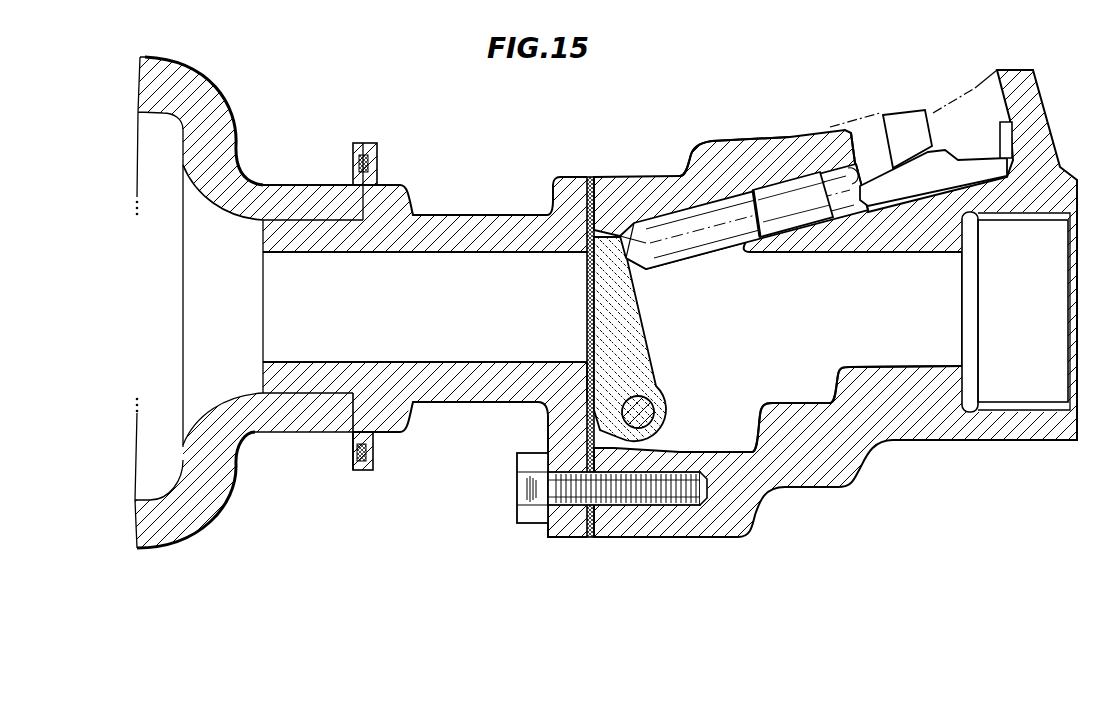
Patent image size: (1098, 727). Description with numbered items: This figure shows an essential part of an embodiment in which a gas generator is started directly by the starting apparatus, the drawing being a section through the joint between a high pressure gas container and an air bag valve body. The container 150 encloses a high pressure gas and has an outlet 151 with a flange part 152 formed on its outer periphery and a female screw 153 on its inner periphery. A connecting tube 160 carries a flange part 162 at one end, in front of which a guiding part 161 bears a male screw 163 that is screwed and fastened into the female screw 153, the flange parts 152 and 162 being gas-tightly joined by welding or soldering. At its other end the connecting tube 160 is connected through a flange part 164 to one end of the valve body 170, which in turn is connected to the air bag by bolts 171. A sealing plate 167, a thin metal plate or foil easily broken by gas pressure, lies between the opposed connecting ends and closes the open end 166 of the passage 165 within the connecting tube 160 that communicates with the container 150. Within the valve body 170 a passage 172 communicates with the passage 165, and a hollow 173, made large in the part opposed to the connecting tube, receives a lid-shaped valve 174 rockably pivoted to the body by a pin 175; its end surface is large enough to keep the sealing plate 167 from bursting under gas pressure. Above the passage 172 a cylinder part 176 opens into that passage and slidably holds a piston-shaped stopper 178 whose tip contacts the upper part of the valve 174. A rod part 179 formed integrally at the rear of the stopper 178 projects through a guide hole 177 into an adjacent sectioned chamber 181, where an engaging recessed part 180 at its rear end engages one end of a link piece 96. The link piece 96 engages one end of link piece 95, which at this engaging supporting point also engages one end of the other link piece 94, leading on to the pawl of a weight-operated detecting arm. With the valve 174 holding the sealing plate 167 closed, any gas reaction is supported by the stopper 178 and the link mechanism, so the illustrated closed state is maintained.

The container 150 is at (210, 85).
The outlet 151 is at (293, 203).
The flange part 152 is at (357, 143).
The female screw 153 is at (253, 221).
The connecting tube 160 is at (425, 350).
The guiding part 161 is at (305, 378).
The flange part 162 is at (373, 143).
The male screw 163 is at (334, 236).
The flange part 164 is at (573, 436).
The passage 165 is at (375, 362).
The open end 166 is at (583, 360).
The sealing plate 167 is at (586, 284).
The valve body 170 is at (835, 302).
The bolt 171 is at (530, 489).
The passage 172 is at (882, 364).
The hollow 173 is at (717, 450).
The valve 174 is at (633, 344).
The pin 175 is at (655, 406).
The cylinder part 176 is at (790, 228).
The guide hole 177 is at (850, 198).
The stopper 178 is at (667, 229).
The rod part 179 is at (790, 200).
The engaging recessed part 180 is at (880, 198).
The sectioned chamber 181 is at (858, 136).
The link piece 94 is at (918, 127).
The link piece 95 is at (968, 153).
The link piece 96 is at (902, 172).